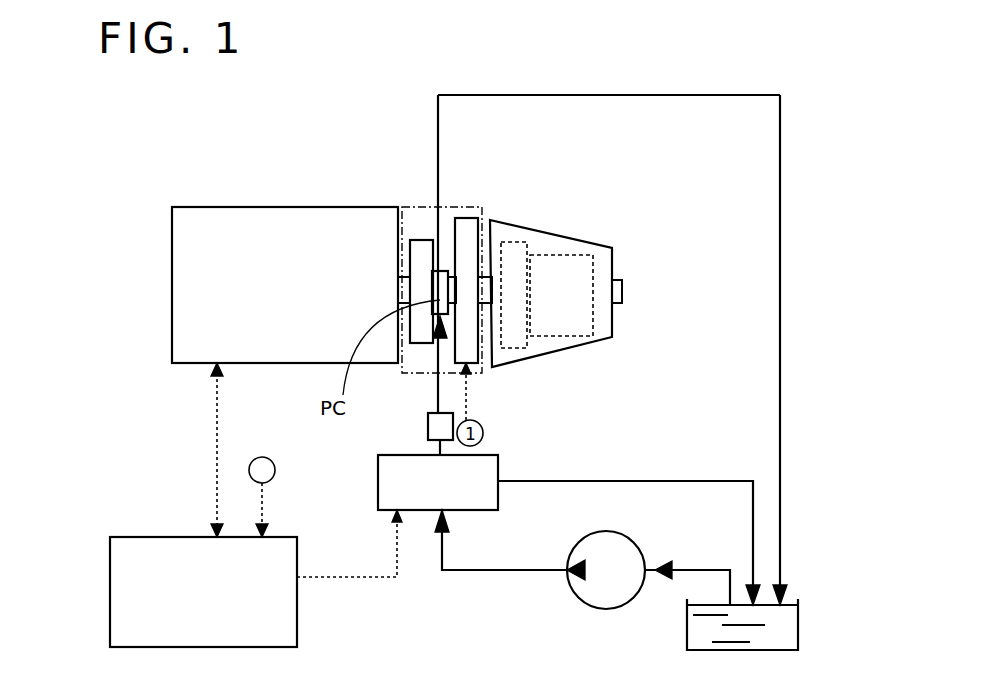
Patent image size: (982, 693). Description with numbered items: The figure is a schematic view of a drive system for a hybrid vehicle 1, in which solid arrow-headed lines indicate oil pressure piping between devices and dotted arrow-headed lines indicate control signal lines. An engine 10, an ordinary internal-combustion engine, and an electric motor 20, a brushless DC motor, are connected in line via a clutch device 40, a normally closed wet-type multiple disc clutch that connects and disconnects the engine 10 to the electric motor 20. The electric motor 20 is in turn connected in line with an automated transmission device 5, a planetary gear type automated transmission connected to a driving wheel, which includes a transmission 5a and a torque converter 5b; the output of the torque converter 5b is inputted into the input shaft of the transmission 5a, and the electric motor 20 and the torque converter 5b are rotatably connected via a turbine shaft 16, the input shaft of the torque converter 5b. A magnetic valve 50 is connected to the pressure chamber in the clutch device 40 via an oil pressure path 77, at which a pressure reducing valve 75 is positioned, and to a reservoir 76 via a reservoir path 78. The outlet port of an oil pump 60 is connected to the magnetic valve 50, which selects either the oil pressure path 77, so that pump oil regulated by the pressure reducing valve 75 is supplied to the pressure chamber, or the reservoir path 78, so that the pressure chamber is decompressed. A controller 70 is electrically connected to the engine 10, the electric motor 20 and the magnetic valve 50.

The drive system for a hybrid vehicle 1 is at (483, 208).
The automated transmission device 5 is at (551, 292).
The transmission 5a is at (562, 337).
The torque converter 5b is at (514, 347).
The engine 10 is at (208, 207).
The turbine shaft 16 is at (483, 312).
The electric motor 20 is at (468, 218).
The clutch device 40 is at (421, 240).
The magnetic valve 50 is at (486, 463).
The oil pump 60 is at (610, 560).
The controller 70 is at (110, 597).
The pressure reducing valve 75 is at (428, 428).
The reservoir 76 is at (798, 627).
The oil pressure path 77 is at (438, 404).
The reservoir path 78 is at (655, 481).